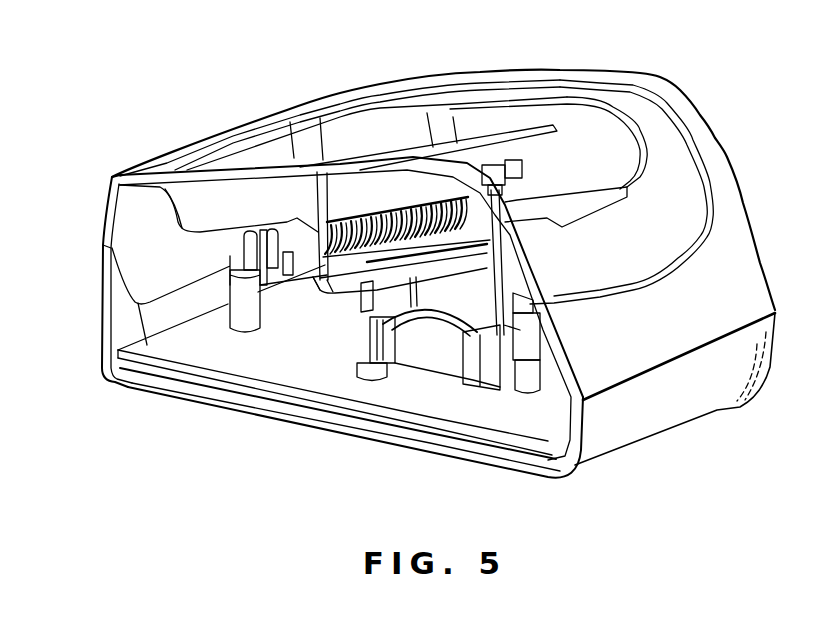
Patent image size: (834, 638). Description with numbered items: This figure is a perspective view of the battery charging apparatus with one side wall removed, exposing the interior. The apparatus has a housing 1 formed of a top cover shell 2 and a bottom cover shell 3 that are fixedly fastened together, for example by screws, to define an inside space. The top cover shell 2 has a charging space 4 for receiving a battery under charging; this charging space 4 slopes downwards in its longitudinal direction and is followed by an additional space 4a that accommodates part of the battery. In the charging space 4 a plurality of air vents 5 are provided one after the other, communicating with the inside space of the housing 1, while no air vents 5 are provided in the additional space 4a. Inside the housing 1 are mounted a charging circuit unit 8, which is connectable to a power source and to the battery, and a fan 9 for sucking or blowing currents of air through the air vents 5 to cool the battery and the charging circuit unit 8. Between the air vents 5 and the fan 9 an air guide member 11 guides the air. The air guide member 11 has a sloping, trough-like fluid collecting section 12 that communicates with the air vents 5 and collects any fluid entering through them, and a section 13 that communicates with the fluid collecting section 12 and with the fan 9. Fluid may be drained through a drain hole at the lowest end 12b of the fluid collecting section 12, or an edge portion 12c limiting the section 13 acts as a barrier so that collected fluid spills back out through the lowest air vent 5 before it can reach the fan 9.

The housing 1 is at (108, 152).
The top cover shell 2 is at (737, 240).
The bottom cover shell 3 is at (753, 349).
The charging space 4 is at (590, 128).
The additional space 4a is at (268, 153).
The air vents 5 is at (417, 205).
The charging circuit unit 8 is at (277, 213).
The fan 9 is at (427, 383).
The air guide member 11 is at (522, 298).
The fluid collecting section 12 is at (332, 297).
The lowest end of the fluid collecting section 12b is at (320, 292).
The edge portion 12c is at (405, 275).
The section communicating with the fan 13 is at (508, 327).